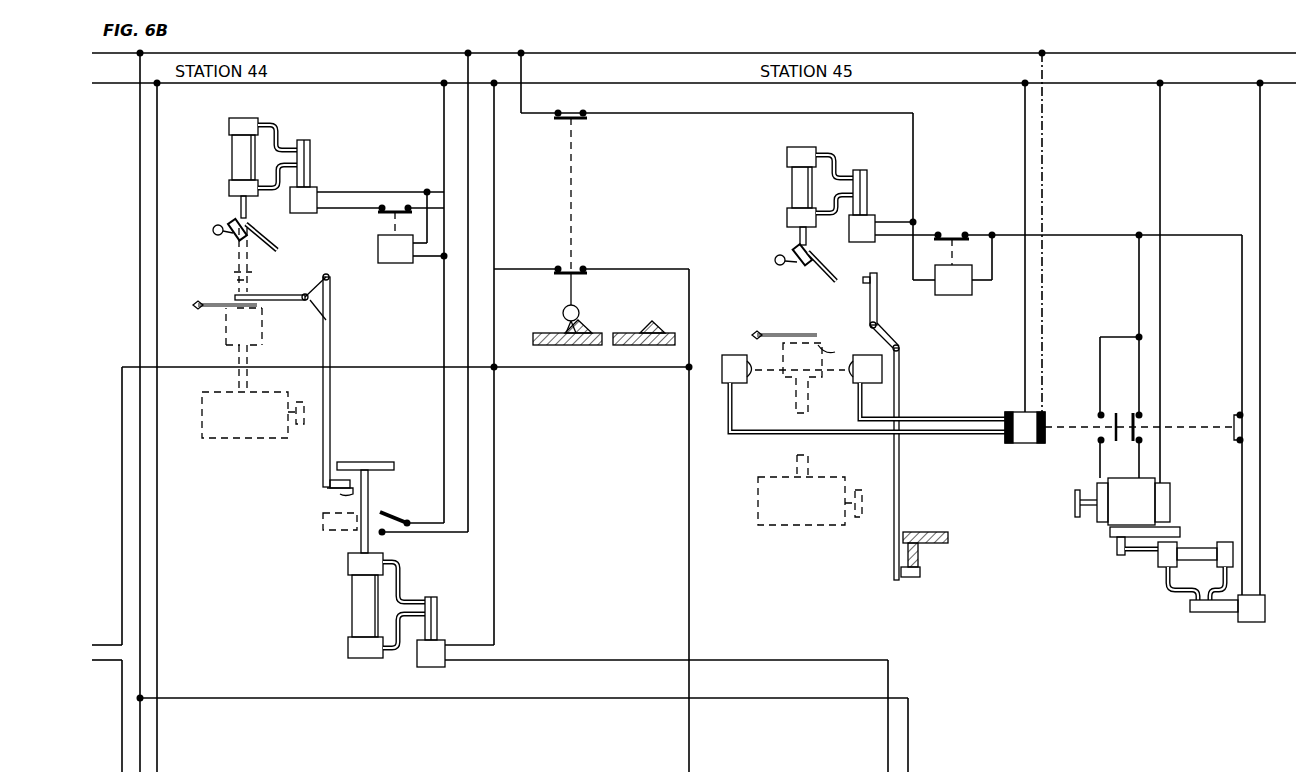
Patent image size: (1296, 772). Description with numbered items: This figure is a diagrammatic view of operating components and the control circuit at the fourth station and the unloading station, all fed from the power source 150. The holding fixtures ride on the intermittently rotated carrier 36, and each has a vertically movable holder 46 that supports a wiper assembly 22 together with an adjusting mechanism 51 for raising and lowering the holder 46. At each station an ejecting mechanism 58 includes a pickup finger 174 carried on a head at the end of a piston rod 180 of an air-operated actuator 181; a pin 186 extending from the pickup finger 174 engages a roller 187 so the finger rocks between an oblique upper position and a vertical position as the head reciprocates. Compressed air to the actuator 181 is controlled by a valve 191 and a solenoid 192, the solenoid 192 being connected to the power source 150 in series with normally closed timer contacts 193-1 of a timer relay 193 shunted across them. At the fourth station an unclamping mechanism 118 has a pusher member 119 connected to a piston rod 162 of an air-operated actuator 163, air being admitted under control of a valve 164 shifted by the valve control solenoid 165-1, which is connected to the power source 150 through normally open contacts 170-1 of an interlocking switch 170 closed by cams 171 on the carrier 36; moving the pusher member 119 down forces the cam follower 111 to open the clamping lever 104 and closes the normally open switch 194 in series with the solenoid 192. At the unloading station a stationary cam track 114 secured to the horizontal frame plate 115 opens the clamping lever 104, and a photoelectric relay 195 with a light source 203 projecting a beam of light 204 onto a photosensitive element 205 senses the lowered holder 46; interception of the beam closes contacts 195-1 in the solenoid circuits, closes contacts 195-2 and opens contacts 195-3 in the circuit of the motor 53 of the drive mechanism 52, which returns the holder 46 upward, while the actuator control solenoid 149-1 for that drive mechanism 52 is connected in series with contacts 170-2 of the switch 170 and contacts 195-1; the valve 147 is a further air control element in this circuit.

The power source 150 is at (648, 83).
The ejecting mechanism 58 is at (522, 172).
The air-operated actuator 181 is at (797, 178).
The valve 191 is at (310, 151).
The solenoid 192 is at (305, 195).
The timer contacts 193-1 is at (395, 205).
The timer relay 193 is at (395, 265).
The piston rod 180 is at (243, 208).
The pin 186 is at (798, 270).
The pickup finger 174 is at (246, 245).
The roller 187 is at (213, 230).
The clamping lever 104 is at (270, 292).
The wiper assembly 22 is at (245, 318).
The adjusting mechanism 51 is at (228, 390).
The pusher member 119 is at (372, 462).
The piston rod 162 is at (362, 533).
The cam follower 111 is at (330, 485).
The switch 194 is at (383, 516).
The unclamping mechanism 118 is at (333, 605).
The air-operated actuator 163 is at (352, 615).
The valve 164 is at (436, 612).
The valve control solenoid 165-1 is at (433, 656).
The contacts 170-2 is at (583, 120).
The contacts 170-1 is at (575, 270).
The interlocking switch 170 is at (576, 294).
The cams 171 is at (650, 328).
The carrier 36 is at (604, 339).
The light source 203 is at (730, 360).
The photosensitive element 205 is at (862, 380).
The beam of light 204 is at (766, 380).
The holder 46 is at (833, 341).
The frame plate 115 is at (930, 534).
The cam track 114 is at (918, 558).
The photoelectric relay 195 is at (1022, 445).
The contacts 195-3 is at (1098, 416).
The contacts 195-2 is at (1140, 418).
The contacts 195-1 is at (1230, 440).
The motor 53 is at (1135, 506).
The drive mechanism 52 is at (1168, 503).
The valve 147 is at (1197, 552).
The actuator control solenoid 149-1 is at (1250, 622).